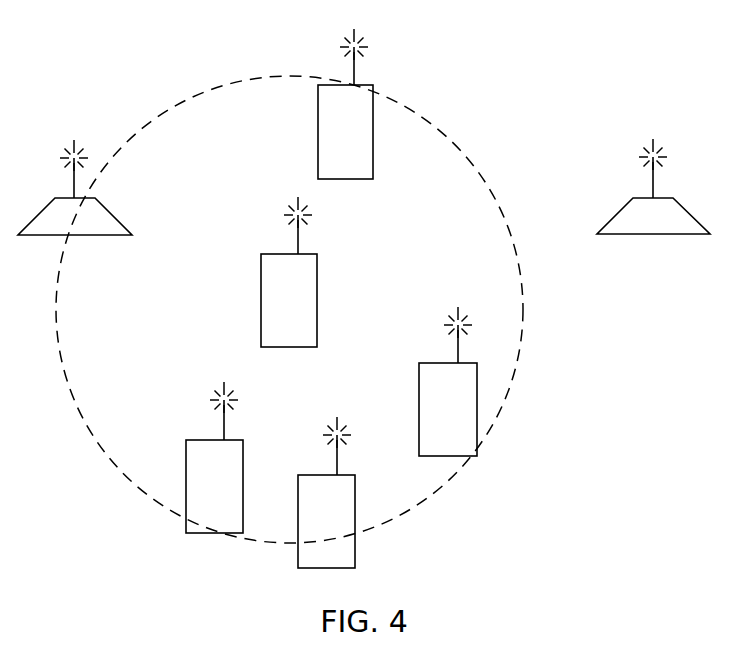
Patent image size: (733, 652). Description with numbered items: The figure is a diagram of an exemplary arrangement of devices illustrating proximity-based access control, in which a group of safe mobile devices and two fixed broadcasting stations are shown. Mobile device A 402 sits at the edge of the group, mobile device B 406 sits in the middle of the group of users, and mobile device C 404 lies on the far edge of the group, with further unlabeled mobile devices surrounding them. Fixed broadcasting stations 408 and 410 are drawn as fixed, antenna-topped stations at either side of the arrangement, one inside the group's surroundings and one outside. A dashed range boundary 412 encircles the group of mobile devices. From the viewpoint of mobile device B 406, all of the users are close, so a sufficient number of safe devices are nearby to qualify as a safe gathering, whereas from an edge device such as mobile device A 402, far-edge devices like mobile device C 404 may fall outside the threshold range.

The mobile device A 402 is at (318, 163).
The mobile device C 404 is at (355, 549).
The mobile device B 406 is at (317, 298).
The fixed broadcasting station 408 is at (112, 235).
The fixed broadcasting station 410 is at (653, 234).
The coverage area 412 is at (452, 134).